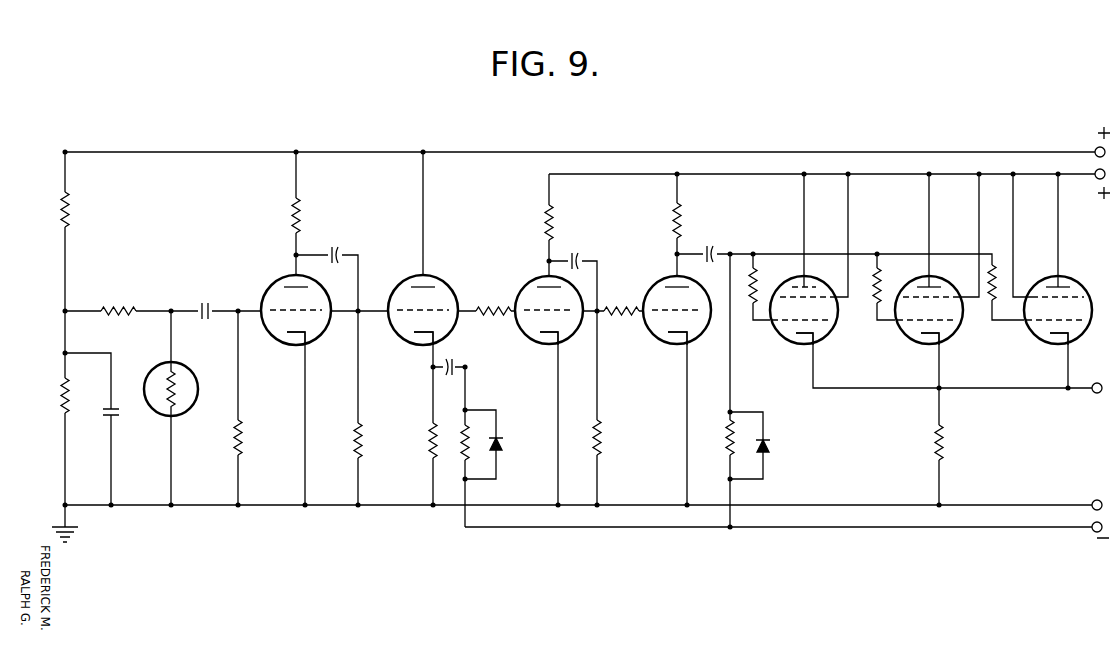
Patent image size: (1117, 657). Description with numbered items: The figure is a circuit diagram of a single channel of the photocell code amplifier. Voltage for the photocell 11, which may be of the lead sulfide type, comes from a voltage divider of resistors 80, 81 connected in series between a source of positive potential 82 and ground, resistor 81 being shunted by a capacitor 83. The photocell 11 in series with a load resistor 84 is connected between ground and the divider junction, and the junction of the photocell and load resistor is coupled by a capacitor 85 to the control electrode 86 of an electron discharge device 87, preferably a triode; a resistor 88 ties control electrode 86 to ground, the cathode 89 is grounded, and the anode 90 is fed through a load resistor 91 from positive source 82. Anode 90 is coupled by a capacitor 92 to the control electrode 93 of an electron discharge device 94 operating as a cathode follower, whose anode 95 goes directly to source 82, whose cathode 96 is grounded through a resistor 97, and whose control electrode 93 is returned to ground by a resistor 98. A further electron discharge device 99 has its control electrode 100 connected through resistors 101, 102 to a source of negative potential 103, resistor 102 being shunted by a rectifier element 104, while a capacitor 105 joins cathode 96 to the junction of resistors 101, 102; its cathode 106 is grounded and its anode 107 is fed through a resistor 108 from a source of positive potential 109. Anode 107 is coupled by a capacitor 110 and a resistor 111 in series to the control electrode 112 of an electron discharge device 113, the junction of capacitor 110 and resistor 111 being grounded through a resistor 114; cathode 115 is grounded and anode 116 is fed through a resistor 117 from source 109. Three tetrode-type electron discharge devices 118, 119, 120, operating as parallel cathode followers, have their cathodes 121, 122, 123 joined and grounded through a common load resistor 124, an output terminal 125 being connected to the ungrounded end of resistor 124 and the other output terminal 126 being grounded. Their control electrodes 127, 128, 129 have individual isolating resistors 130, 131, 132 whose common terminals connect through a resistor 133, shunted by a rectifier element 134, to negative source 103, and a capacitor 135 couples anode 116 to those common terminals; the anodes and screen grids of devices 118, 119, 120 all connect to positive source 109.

The photocell 11 is at (158, 405).
The resistor 80 is at (60, 212).
The resistor 81 is at (60, 402).
The source of positive potential 82 is at (1095, 146).
The capacitor 83 is at (107, 418).
The load resistor 84 is at (123, 305).
The capacitor 85 is at (210, 305).
The control electrode 86 is at (283, 313).
The electron discharge device 87 is at (275, 294).
The resistor 88 is at (233, 445).
The cathode 89 is at (297, 336).
The anode 90 is at (306, 292).
The load resistor 91 is at (290, 213).
The capacitor 92 is at (337, 250).
The control electrode 93 is at (410, 307).
The electron discharge device 94 is at (448, 296).
The anode 95 is at (428, 288).
The cathode 96 is at (420, 344).
The resistor 97 is at (428, 447).
The resistor 98 is at (352, 447).
The electron discharge device 99 is at (527, 298).
The control electrode 100 is at (538, 313).
The resistor 101 is at (492, 318).
The resistor 102 is at (462, 450).
The source of negative potential 103 is at (1090, 533).
The rectifier element 104 is at (503, 441).
The capacitor 105 is at (443, 374).
The cathode 106 is at (550, 345).
The anode 107 is at (541, 276).
The resistor 108 is at (543, 222).
The source of positive potential 109 is at (1097, 180).
The capacitor 110 is at (573, 252).
The resistor 111 is at (617, 305).
The control electrode 112 is at (664, 315).
The electron discharge device 113 is at (652, 290).
The resistor 114 is at (604, 441).
The cathode 115 is at (673, 342).
The anode 116 is at (683, 286).
The resistor 117 is at (683, 222).
The electron discharge device 118 is at (828, 328).
The electron discharge device 119 is at (952, 326).
The electron discharge device 120 is at (1075, 328).
The cathode 121 is at (802, 336).
The cathode 122 is at (928, 336).
The cathode 123 is at (1057, 336).
The common load resistor 124 is at (944, 453).
The output terminal 125 is at (1093, 395).
The output terminal 126 is at (1093, 500).
The control electrode 127 is at (790, 322).
The control electrode 128 is at (912, 322).
The control electrode 129 is at (1044, 323).
The isolating resistor 130 is at (757, 285).
The isolating resistor 131 is at (882, 265).
The isolating resistor 132 is at (1001, 272).
The resistor 133 is at (725, 444).
The rectifier element 134 is at (771, 447).
The capacitor 135 is at (713, 250).